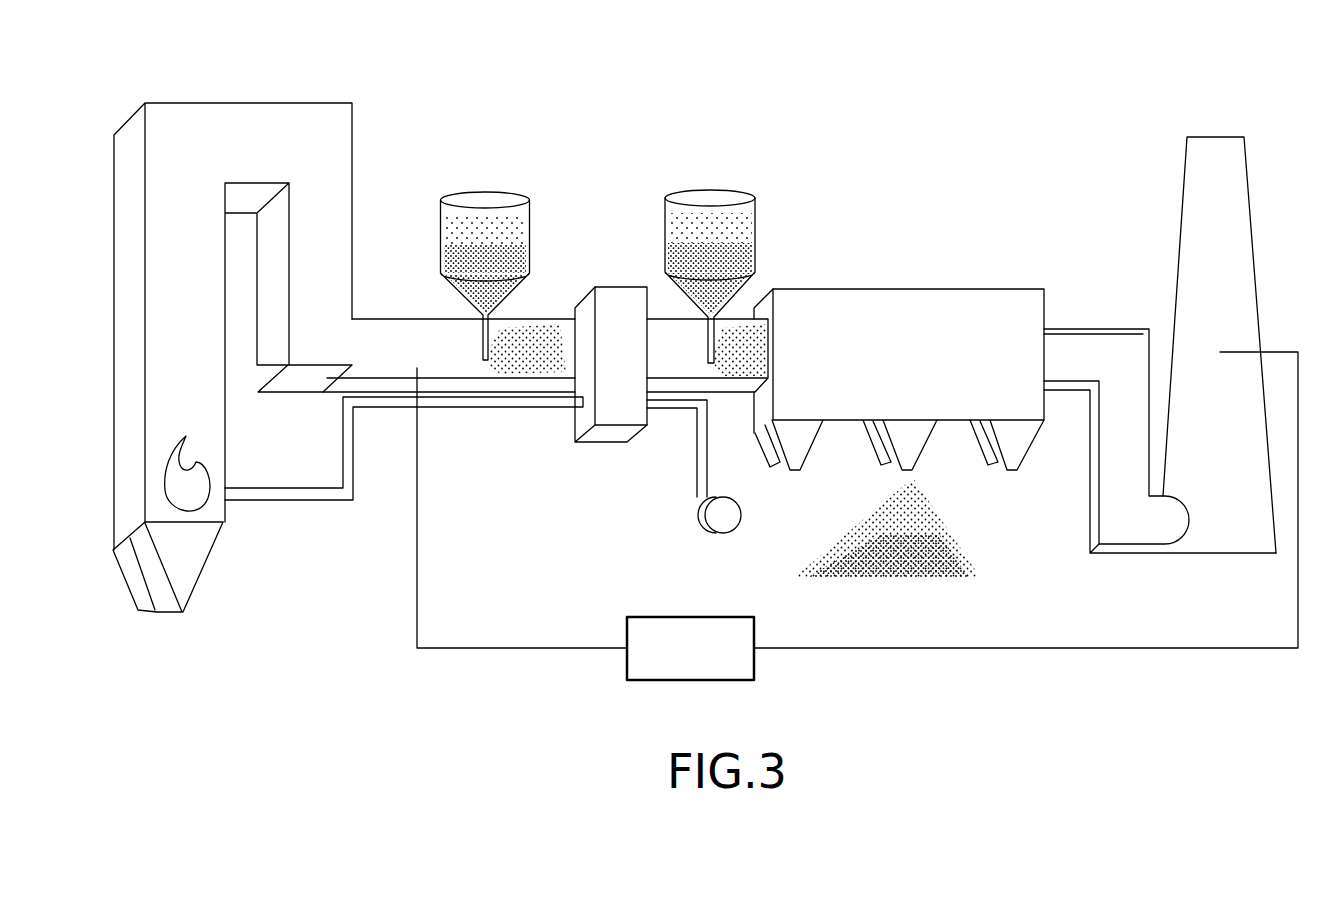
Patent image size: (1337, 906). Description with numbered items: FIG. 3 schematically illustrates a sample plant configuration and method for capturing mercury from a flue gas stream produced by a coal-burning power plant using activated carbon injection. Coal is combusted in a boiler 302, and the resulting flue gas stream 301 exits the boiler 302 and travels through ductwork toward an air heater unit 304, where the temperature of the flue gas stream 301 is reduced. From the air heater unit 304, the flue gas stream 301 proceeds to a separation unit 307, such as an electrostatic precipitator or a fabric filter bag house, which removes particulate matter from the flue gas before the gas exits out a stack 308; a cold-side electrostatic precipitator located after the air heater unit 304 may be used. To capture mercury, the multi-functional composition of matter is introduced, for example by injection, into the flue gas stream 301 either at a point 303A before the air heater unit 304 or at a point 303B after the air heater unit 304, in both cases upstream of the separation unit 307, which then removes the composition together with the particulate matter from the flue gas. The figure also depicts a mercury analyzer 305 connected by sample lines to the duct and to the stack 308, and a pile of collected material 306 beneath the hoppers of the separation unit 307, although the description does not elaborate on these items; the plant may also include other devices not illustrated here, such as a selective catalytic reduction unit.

The flue gas stream 301 is at (441, 350).
The boiler 302 is at (243, 103).
The injection point before the air heater unit 303A is at (518, 192).
The injection point after the air heater unit 303B is at (740, 196).
The air heater unit 304 is at (614, 286).
The mercury analyzer 305 is at (762, 636).
The collected fly ash 306 is at (983, 568).
The separation unit 307 is at (1004, 302).
The stack 308 is at (1190, 220).